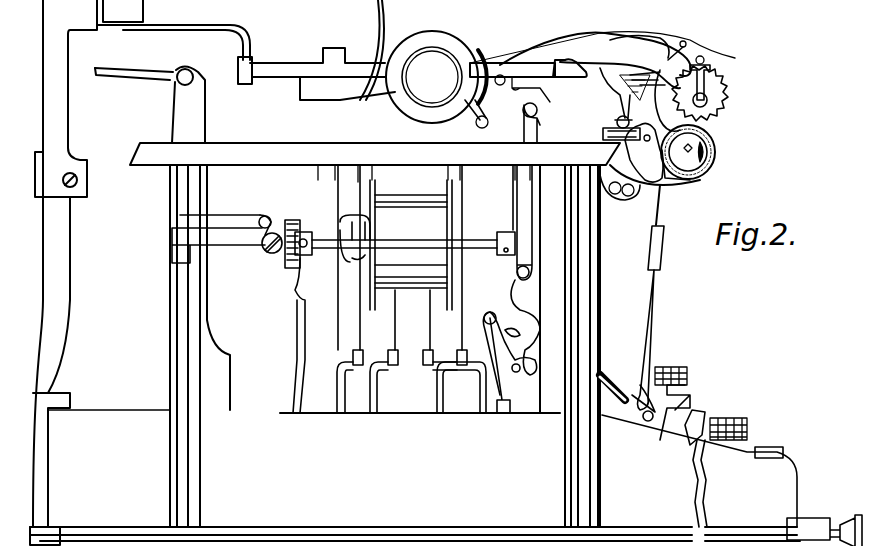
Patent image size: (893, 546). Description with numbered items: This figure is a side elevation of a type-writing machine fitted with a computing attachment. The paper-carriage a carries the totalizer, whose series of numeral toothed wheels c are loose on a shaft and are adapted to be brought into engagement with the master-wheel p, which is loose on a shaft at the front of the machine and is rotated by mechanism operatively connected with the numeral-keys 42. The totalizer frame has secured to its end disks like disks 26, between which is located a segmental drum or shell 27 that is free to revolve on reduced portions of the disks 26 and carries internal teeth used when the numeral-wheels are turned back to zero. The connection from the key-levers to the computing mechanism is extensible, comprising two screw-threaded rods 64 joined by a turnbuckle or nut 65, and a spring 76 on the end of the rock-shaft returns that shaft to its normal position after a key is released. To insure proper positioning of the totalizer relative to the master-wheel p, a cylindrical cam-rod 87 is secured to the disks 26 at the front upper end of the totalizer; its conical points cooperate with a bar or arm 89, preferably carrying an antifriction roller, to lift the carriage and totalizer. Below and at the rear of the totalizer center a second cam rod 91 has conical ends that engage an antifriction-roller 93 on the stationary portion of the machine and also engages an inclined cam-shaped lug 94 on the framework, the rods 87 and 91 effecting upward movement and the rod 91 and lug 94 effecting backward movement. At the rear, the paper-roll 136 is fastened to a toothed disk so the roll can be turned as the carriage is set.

The paper-roll 136 is at (432, 33).
The paper-carriage a is at (490, 68).
The segmental drum or shell 27 is at (633, 38).
The disk 26 is at (642, 52).
The numeral toothed wheel c is at (676, 60).
The cam-rod 87 is at (703, 60).
The bar or arm 89 is at (712, 62).
The master-wheel p is at (720, 88).
The second cam rod or bar 91 is at (620, 122).
The antifriction-roller 93 is at (615, 136).
The inclined or cam-shaped lug 94 is at (650, 161).
The spring 76 is at (710, 152).
The screw-threaded rod 64 is at (656, 213).
The turnbuckle or nut 65 is at (656, 252).
The numeral-key 42 is at (716, 420).